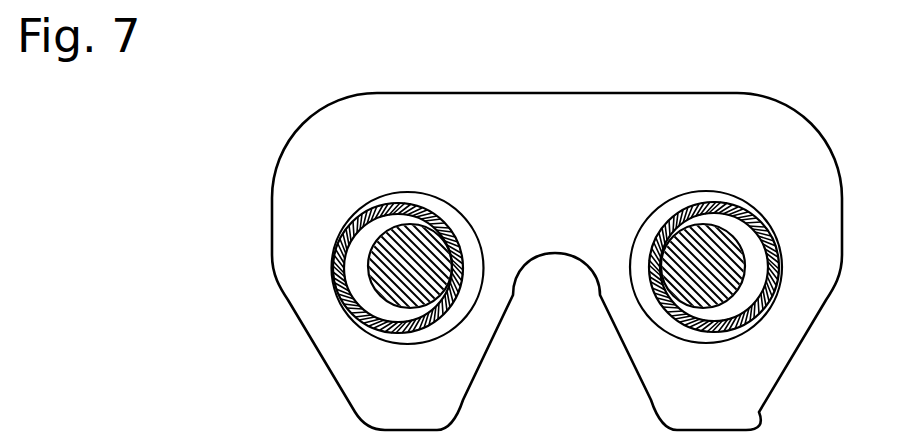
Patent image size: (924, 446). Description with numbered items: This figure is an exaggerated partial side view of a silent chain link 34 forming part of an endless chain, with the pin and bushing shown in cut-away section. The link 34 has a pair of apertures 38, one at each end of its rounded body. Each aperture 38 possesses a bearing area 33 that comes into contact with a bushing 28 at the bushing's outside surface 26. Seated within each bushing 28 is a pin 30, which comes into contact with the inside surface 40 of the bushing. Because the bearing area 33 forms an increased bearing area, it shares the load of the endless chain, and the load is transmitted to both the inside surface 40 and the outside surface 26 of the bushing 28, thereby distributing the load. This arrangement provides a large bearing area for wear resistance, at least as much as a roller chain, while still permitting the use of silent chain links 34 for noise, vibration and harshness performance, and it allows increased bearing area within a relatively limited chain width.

The outside surface 26 is at (350, 317).
The bushing 28 is at (362, 210).
The pin 30 is at (697, 258).
The bearing area 33 is at (335, 248).
The link 34 is at (535, 170).
The aperture 38 is at (640, 253).
The inside surface 40 is at (413, 200).